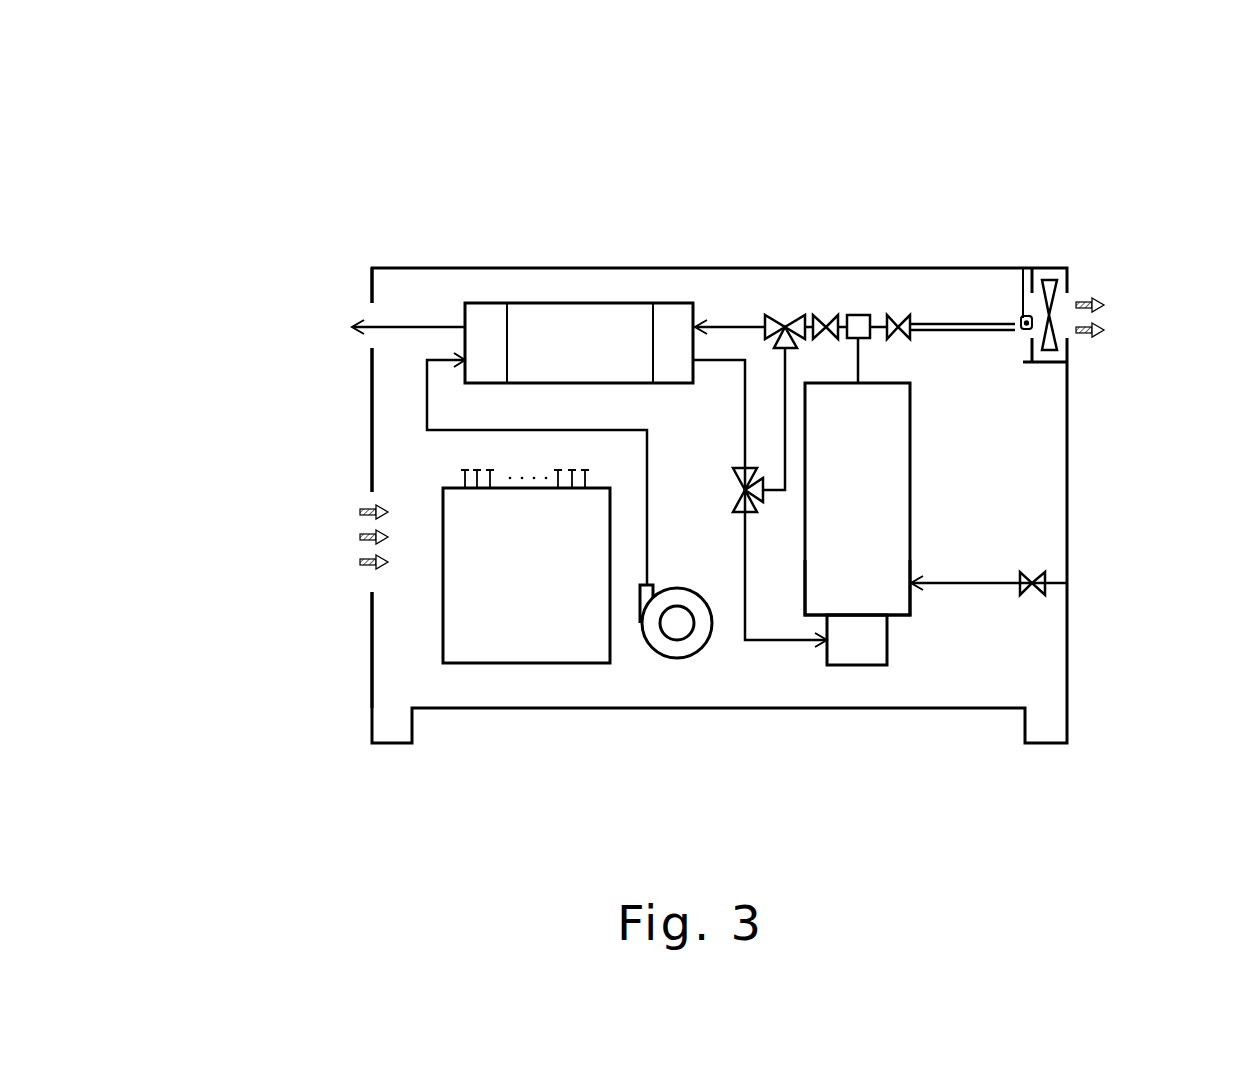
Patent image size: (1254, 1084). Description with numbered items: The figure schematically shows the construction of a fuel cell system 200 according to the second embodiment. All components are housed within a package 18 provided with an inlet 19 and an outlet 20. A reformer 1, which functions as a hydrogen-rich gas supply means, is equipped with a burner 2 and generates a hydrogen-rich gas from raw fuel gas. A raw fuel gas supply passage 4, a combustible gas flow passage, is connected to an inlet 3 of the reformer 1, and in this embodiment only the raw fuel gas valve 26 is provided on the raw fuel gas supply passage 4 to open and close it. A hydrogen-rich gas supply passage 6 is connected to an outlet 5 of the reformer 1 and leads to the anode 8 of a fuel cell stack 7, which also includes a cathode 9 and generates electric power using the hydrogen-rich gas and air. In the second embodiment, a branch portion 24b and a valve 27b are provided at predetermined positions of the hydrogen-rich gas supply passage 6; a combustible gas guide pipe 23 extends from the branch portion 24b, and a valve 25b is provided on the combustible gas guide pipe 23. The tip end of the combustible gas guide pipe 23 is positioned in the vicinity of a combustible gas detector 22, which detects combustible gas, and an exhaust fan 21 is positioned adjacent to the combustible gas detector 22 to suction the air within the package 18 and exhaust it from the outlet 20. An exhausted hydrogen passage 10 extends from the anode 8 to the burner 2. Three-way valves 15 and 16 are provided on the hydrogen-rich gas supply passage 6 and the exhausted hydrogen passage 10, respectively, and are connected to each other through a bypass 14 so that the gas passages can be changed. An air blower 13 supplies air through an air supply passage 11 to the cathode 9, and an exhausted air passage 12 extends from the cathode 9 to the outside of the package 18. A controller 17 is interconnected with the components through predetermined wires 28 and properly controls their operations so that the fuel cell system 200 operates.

The reformer 1 is at (910, 493).
The burner 2 is at (847, 665).
The inlet 3 is at (912, 588).
The raw fuel gas supply passage 4 is at (993, 583).
The outlet 5 is at (858, 383).
The hydrogen-rich gas supply passage 6 is at (858, 352).
The fuel cell stack 7 is at (562, 303).
The anode 8 is at (670, 303).
The cathode 9 is at (485, 303).
The exhausted hydrogen passage 10 is at (770, 640).
The air supply passage 11 is at (460, 428).
The exhausted air passage 12 is at (400, 327).
The air blower 13 is at (675, 665).
The bypass 14 is at (783, 395).
The three-way valve 15 is at (785, 315).
The three-way valve 16 is at (740, 512).
The controller 17 is at (540, 663).
The package 18 is at (370, 657).
The inlet 19 is at (370, 577).
The outlet 20 is at (1063, 305).
The exhaust fan 21 is at (1052, 278).
The combustible gas detector 22 is at (1021, 322).
The combustible gas guide pipe 23 is at (945, 323).
The branch portion 24b is at (858, 315).
The valve 25b is at (898, 315).
The raw fuel gas valve 26 is at (1043, 590).
The valve 27b is at (826, 315).
The predetermined wires 28 is at (463, 478).
The fuel cell system 200 is at (1203, 181).